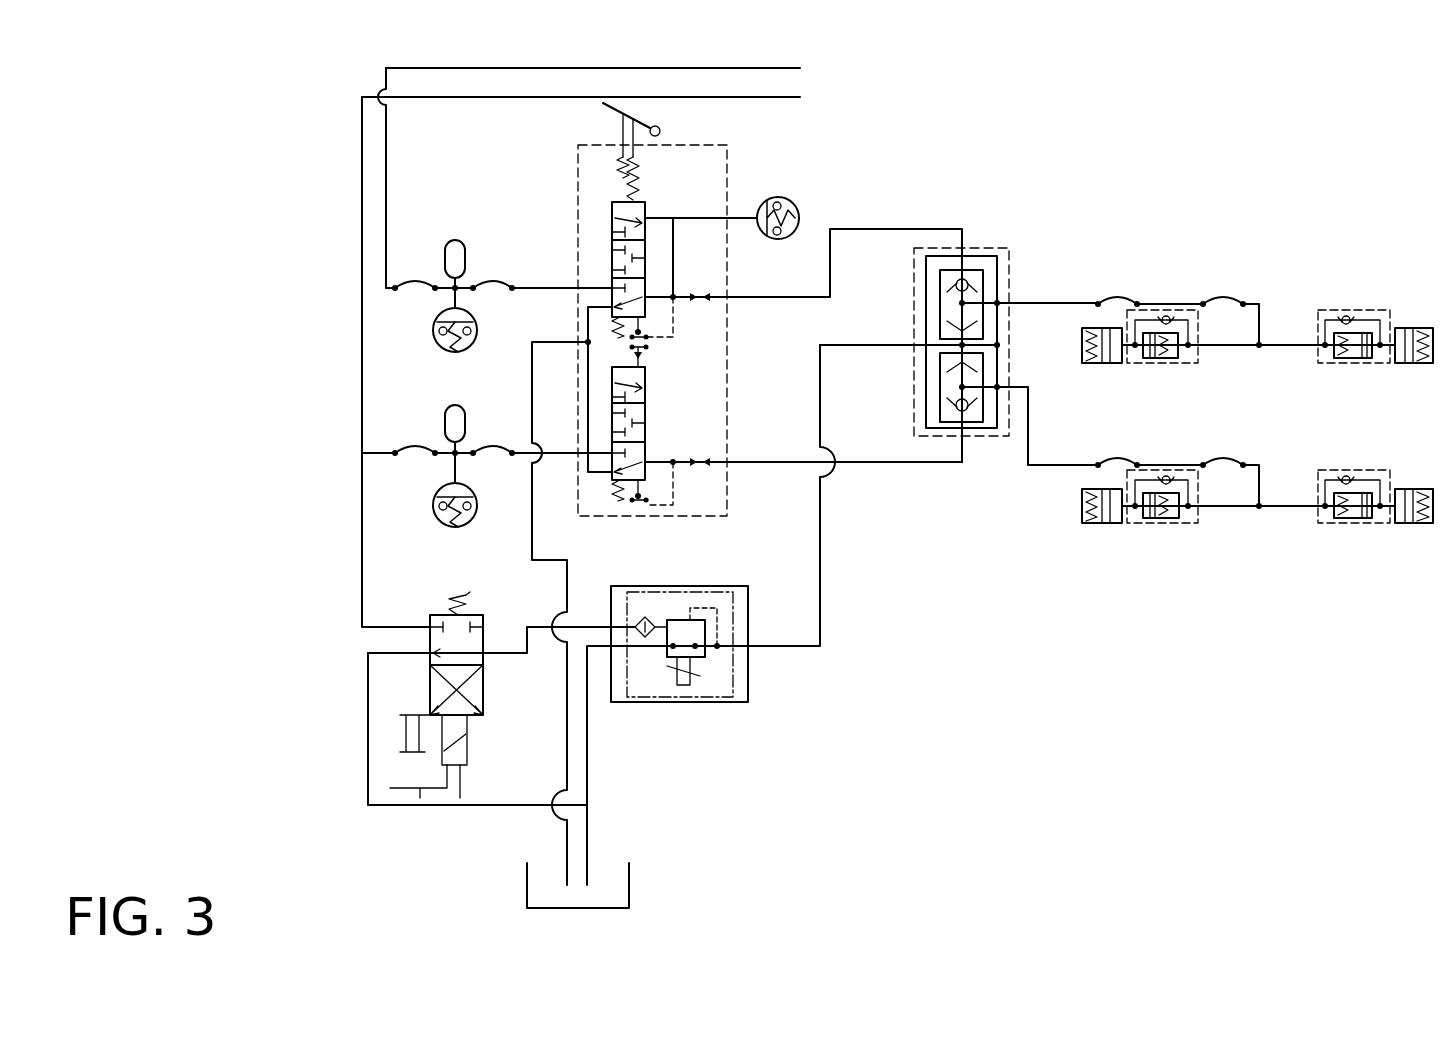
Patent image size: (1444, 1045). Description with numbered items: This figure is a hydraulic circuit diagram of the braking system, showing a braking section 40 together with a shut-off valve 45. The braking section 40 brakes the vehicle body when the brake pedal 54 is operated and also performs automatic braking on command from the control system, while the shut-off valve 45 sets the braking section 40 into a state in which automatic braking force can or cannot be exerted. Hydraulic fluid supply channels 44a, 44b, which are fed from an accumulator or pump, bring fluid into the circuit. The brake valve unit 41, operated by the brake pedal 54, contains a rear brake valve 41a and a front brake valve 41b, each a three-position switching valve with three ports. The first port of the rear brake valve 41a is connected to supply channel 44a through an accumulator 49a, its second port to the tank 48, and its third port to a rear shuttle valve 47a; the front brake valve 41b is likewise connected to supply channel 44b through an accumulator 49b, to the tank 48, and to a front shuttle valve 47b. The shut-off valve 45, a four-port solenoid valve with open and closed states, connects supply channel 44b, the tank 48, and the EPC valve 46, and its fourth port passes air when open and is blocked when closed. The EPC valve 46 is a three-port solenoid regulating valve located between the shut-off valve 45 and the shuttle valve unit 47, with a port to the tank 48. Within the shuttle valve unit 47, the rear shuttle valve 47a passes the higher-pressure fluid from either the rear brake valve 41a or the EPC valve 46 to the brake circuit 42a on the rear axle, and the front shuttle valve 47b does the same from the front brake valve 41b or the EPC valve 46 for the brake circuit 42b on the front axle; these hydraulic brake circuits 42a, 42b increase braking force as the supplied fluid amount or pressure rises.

The braking section 40 is at (997, 525).
The brake valve unit 41 is at (578, 177).
The rear brake valve 41a is at (648, 225).
The front brake valve 41b is at (648, 420).
The brake circuit 42a is at (1285, 340).
The brake circuit 42b is at (1295, 505).
The hydraulic fluid supply channel 44a is at (700, 64).
The hydraulic fluid supply channel 44b is at (705, 100).
The shut-off valve 45 is at (425, 627).
The electronic proportional (EPC) valve 46 is at (677, 620).
The shuttle valve unit 47 is at (988, 245).
The rear shuttle valve 47a is at (983, 285).
The front shuttle valve 47b is at (983, 371).
The tank 48 is at (629, 890).
The accumulator 49a is at (445, 262).
The accumulator 49b is at (445, 427).
The brake pedal 54 is at (617, 112).